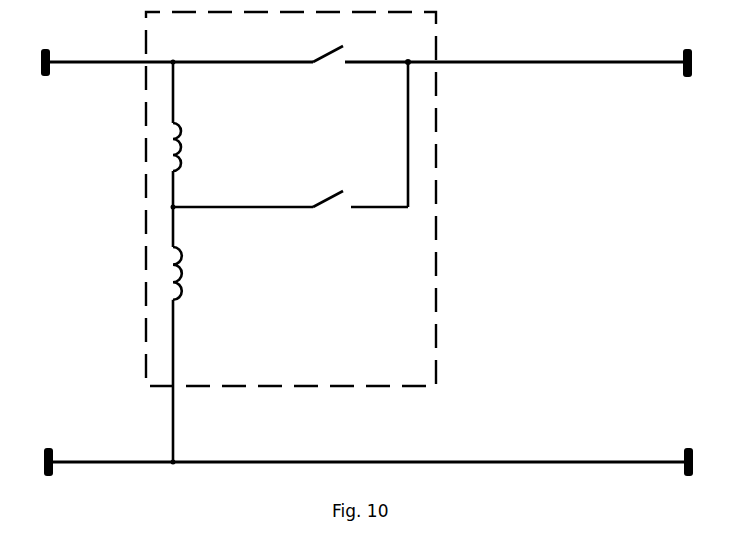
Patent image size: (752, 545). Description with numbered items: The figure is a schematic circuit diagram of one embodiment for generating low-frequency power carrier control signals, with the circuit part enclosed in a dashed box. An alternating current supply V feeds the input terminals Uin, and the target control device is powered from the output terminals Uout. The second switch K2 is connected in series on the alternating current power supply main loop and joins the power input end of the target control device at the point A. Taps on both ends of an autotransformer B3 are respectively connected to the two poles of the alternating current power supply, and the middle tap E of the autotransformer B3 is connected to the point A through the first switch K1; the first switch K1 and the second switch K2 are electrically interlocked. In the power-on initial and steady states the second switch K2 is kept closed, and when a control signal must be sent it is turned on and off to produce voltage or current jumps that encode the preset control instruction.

The input voltage terminals Uin is at (364, 254).
The output voltage terminals Uout is at (519, 254).
The AC voltage source V is at (33, 237).
The autotransformer B3 is at (188, 262).
The middle tap E is at (242, 214).
The first switch K1 is at (360, 213).
The second switch K2 is at (328, 69).
The point A is at (409, 122).